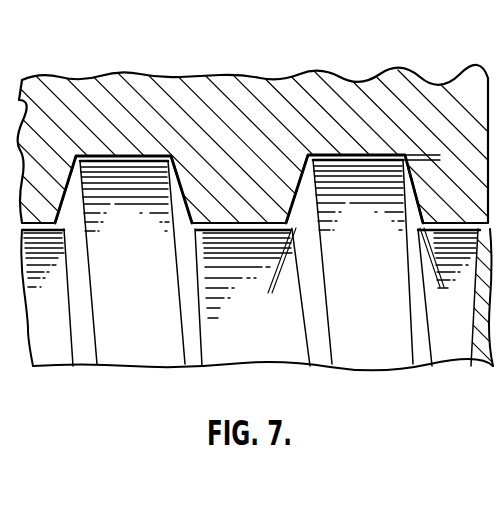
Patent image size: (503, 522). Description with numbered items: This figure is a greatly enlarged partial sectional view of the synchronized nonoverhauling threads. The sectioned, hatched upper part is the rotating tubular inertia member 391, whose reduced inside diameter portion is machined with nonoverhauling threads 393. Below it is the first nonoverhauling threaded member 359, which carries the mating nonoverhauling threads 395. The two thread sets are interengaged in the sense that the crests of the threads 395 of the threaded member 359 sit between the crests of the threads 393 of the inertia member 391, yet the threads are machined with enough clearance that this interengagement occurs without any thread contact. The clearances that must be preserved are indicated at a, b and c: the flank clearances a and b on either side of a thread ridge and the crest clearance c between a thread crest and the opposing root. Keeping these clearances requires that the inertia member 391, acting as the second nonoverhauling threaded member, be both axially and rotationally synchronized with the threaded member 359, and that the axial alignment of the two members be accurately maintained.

The inertia member 391 is at (133, 107).
The nonoverhauling threads 393 is at (246, 158).
The nonoverhauling threads 395 is at (140, 330).
The first nonoverhauling threaded member 359 is at (243, 340).
The clearance a is at (466, 275).
The clearance b is at (246, 284).
The clearance c is at (431, 182).